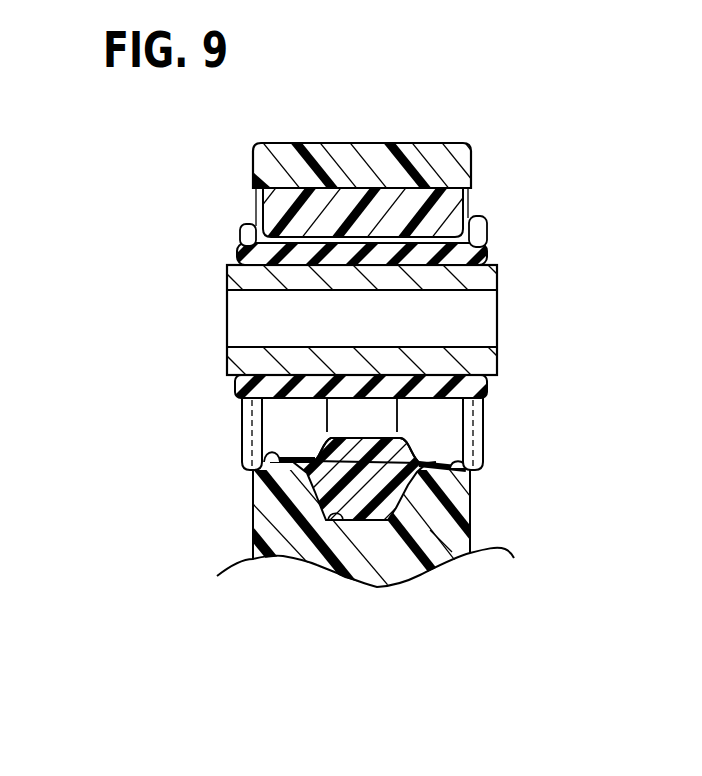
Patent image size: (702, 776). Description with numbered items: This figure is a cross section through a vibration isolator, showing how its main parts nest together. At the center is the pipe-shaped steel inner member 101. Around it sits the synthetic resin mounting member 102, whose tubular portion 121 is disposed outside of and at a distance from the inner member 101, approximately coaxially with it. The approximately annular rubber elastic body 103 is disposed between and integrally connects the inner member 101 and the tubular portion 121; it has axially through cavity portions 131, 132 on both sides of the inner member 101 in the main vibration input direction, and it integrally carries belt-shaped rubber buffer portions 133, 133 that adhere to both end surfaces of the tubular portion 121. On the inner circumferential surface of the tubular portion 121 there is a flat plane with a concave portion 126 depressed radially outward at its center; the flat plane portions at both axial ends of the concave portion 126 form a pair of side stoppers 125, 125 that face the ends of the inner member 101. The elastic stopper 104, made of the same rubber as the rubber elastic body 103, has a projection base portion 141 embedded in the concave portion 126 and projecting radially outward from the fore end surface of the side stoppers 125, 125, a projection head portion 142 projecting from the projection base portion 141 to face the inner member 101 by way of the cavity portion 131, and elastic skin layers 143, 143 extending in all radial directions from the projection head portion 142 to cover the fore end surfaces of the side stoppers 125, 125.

The inner member 101 is at (500, 290).
The mounting member 102 is at (394, 139).
The rubber elastic body 103 is at (233, 380).
The elastic stopper 104 is at (318, 434).
The tubular portion 121 is at (343, 160).
The side stoppers 125 is at (262, 485).
The concave portion 126 is at (323, 550).
The cavity portion 131 is at (445, 412).
The cavity portion 132 is at (453, 240).
The rubber buffer portions 133 is at (247, 228).
The projection base portion 141 is at (443, 565).
The projection head portion 142 is at (375, 440).
The elastic skin layers 143 is at (243, 450).